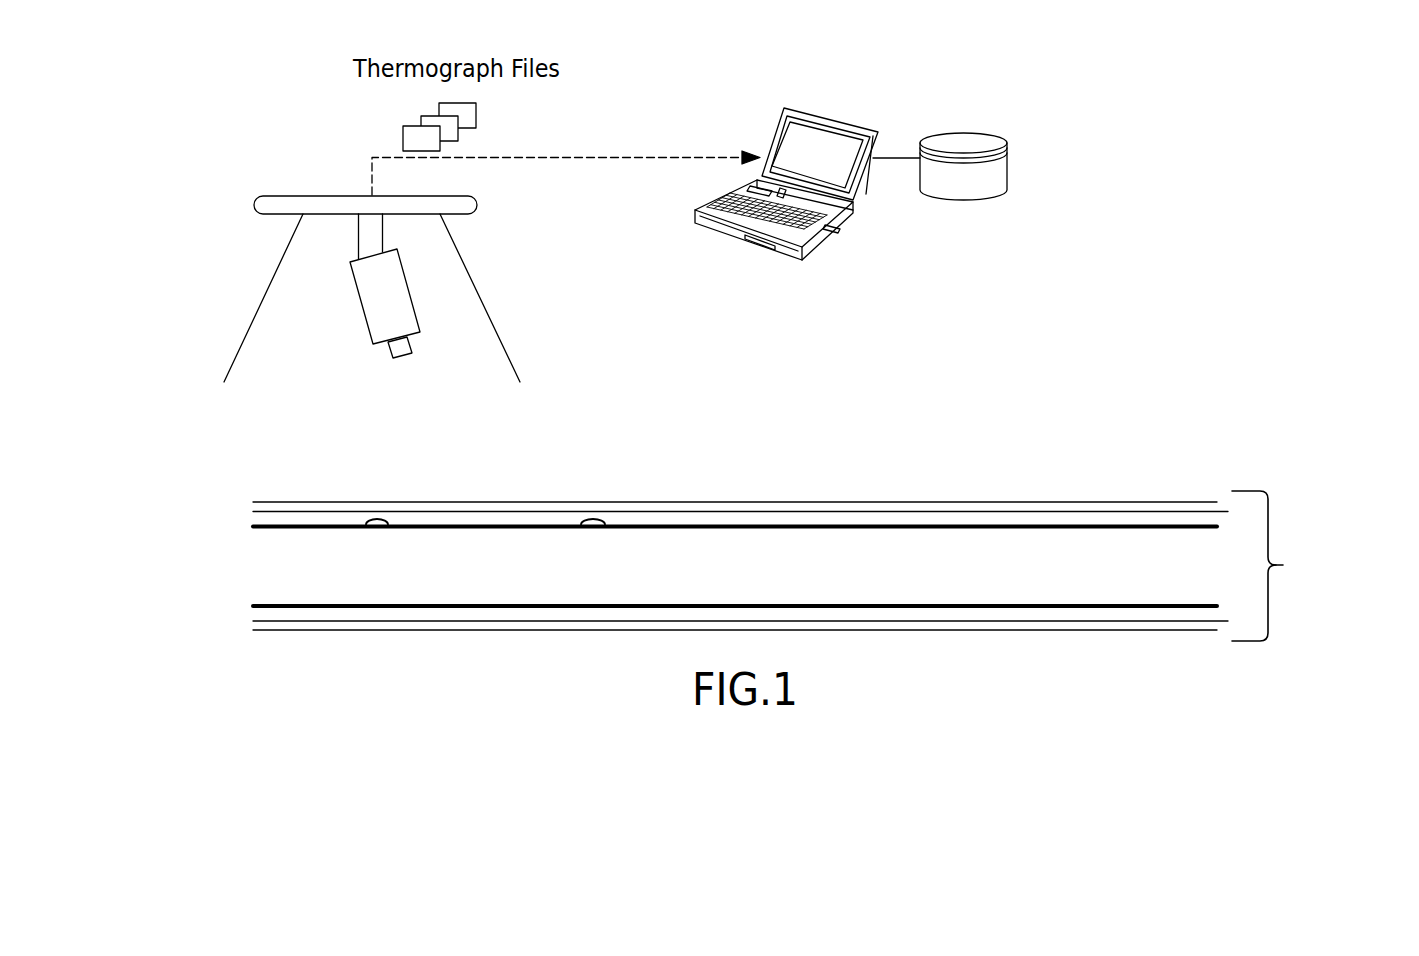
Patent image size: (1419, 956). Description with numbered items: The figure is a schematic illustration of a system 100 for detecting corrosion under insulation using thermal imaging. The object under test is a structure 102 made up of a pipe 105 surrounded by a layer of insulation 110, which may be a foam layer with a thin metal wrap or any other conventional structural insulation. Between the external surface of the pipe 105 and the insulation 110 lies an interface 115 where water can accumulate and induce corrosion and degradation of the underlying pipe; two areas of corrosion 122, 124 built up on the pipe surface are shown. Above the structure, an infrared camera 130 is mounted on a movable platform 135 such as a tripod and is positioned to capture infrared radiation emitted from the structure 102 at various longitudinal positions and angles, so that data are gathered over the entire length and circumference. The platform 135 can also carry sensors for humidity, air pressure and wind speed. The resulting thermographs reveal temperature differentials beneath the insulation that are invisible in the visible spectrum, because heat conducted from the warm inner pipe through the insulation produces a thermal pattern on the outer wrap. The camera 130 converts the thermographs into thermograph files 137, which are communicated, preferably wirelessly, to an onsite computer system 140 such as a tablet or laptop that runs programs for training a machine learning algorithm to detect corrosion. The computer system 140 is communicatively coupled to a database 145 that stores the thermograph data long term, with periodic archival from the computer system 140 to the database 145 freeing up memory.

The system 100 is at (263, 118).
The structure 102 is at (796, 537).
The pipe 105 is at (523, 524).
The insulation 110 is at (435, 508).
The interface 115 is at (789, 515).
The area of corrosion 122 is at (372, 518).
The area of corrosion 124 is at (592, 520).
The infrared camera 130 is at (358, 303).
The movable platform 135 is at (320, 195).
The thermograph files 137 is at (477, 115).
The computer system 140 is at (772, 135).
The database 145 is at (1008, 165).